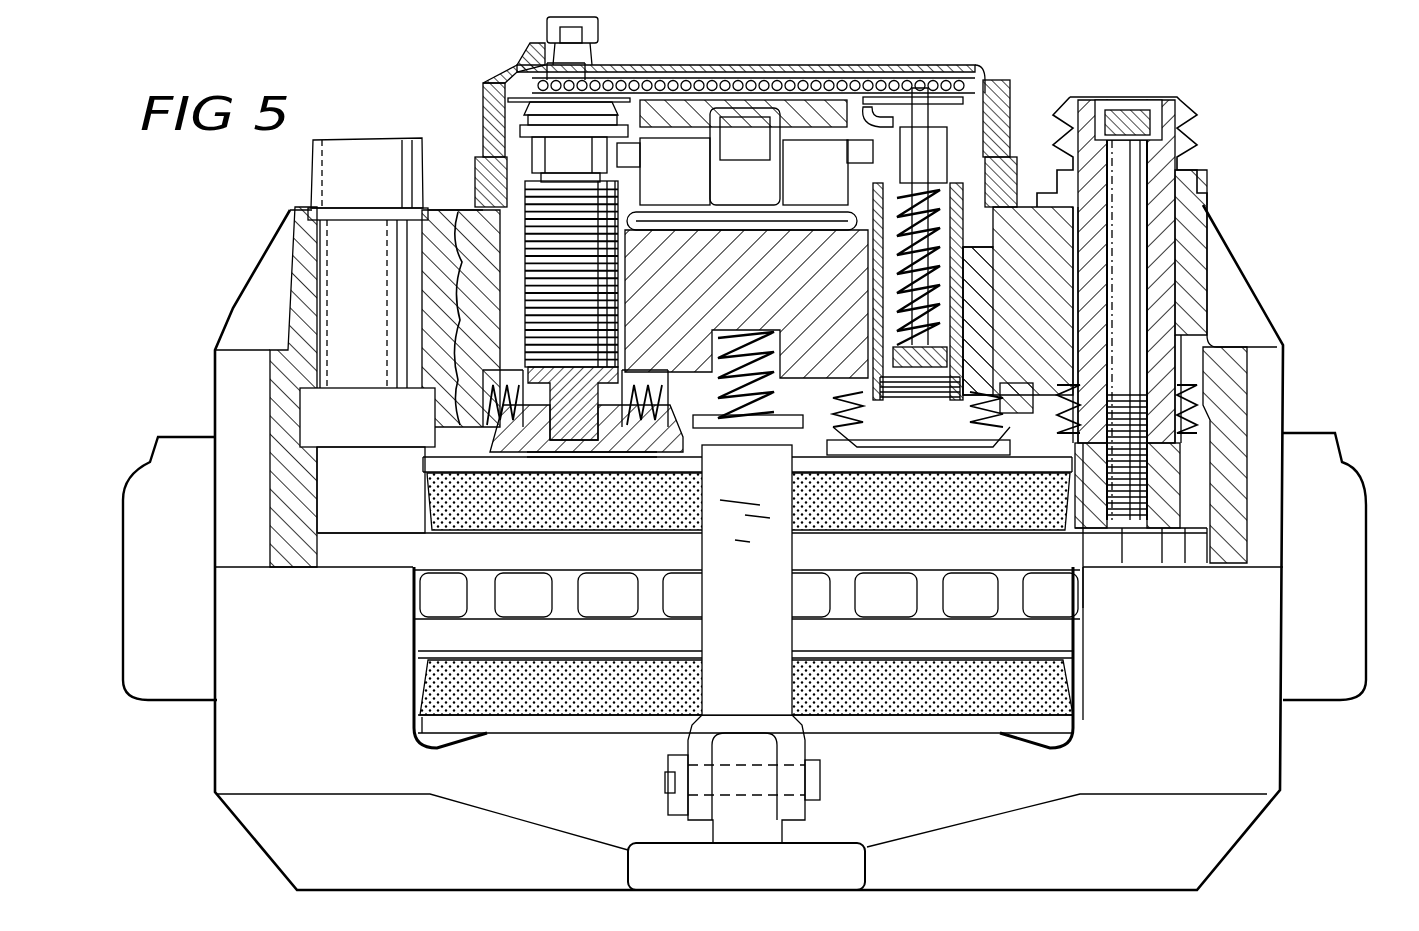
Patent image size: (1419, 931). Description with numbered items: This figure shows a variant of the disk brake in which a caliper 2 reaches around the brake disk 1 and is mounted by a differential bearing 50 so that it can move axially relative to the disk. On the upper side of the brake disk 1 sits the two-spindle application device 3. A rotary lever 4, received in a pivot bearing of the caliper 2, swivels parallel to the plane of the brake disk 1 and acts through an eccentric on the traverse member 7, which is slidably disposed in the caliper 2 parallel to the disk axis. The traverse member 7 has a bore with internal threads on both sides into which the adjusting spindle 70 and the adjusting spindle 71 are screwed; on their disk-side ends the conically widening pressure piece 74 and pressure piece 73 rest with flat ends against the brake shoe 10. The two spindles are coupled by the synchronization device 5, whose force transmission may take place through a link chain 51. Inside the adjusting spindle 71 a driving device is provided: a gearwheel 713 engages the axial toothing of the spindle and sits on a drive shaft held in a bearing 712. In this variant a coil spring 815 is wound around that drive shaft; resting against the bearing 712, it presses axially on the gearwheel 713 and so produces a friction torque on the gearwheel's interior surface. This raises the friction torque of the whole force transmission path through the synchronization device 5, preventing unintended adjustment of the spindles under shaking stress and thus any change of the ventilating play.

The brake disk 1 is at (1053, 645).
The caliper 2 is at (1252, 742).
The two-spindle application device 3 is at (640, 44).
The rotary lever 4 is at (798, 153).
The synchronization device 5 is at (717, 65).
The traverse member 7 is at (667, 247).
The brake shoe 10 is at (442, 537).
The differential bearing 50 is at (1197, 167).
The link chain 51 is at (320, 170).
The adjusting spindle 70 is at (523, 200).
The adjusting spindle 71 is at (977, 193).
The pressure piece 73 is at (867, 443).
The pressure piece 74 is at (422, 457).
The bearing 712 is at (968, 103).
The gearwheel 713 is at (1000, 347).
The coil spring 815 is at (977, 307).